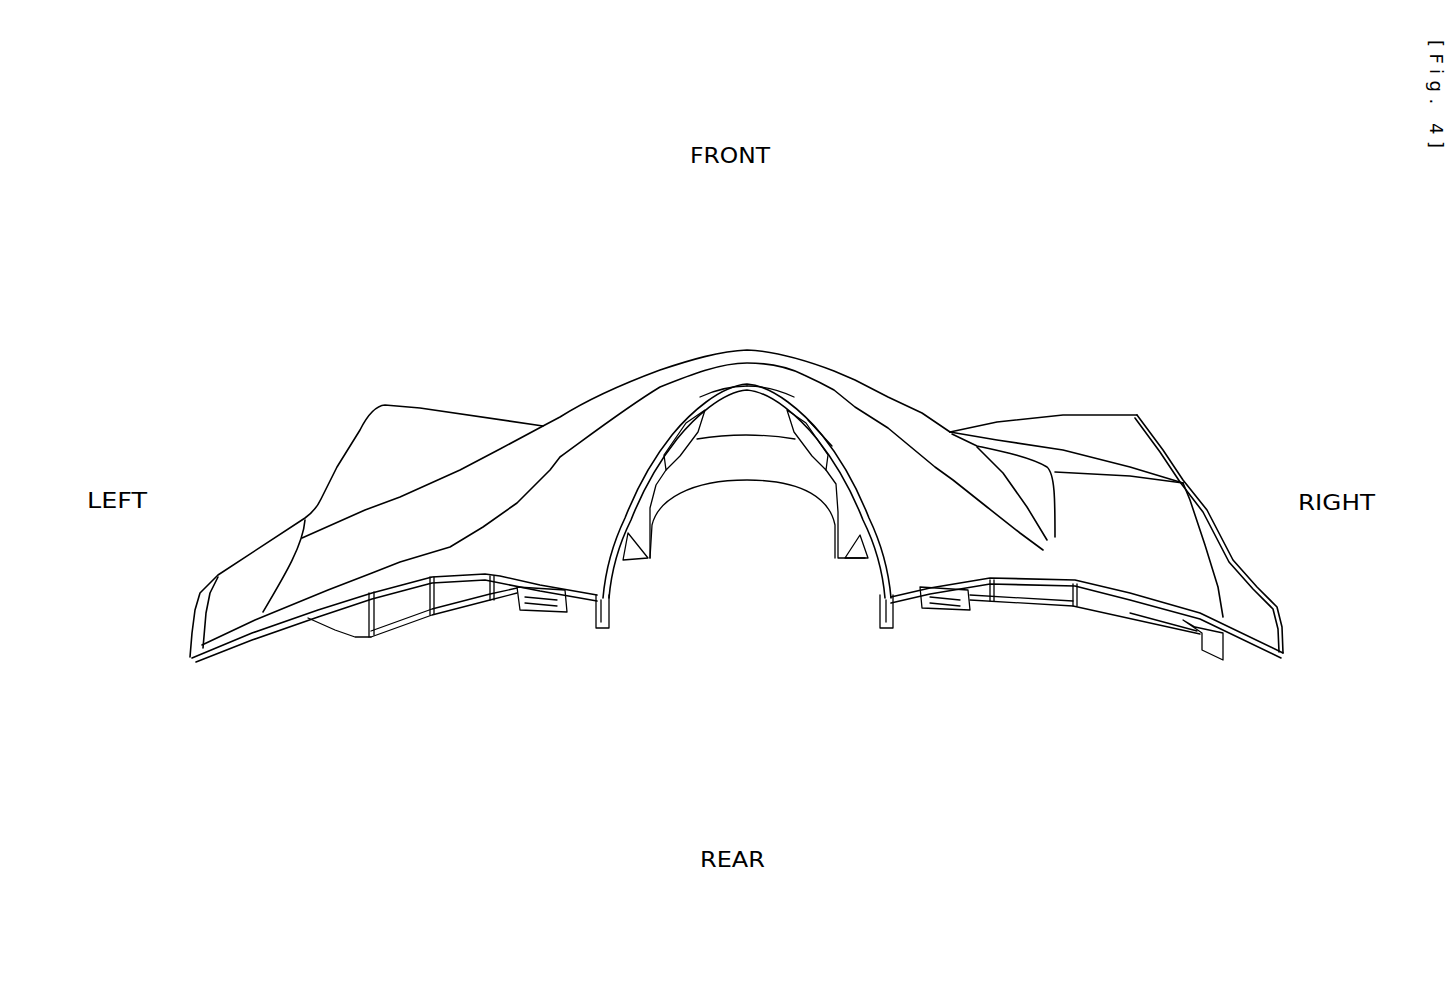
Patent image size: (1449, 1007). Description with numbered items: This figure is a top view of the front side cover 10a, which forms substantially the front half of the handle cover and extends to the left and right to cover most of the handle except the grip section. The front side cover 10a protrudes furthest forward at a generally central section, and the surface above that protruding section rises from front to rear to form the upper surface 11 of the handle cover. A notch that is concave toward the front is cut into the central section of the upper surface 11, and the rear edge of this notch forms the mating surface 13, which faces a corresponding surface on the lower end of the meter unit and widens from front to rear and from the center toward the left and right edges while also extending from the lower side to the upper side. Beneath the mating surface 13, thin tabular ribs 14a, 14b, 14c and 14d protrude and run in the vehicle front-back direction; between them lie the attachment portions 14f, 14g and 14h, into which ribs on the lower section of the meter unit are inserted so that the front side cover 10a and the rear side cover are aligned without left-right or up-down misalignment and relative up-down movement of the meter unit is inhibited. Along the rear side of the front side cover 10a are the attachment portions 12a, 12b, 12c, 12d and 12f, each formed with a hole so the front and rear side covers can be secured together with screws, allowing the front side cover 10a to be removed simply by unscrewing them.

The front side cover 10a is at (418, 362).
The upper surface 11 is at (893, 467).
The mating surface 13 is at (768, 390).
The rib 14a is at (632, 537).
The rib 14b is at (680, 455).
The rib 14c is at (652, 447).
The rib 14d is at (859, 538).
The attachment portion 14f is at (705, 392).
The attachment portion 14g is at (788, 397).
The attachment portion 14h is at (833, 450).
The attachment portion 12a is at (533, 608).
The attachment portion 12b is at (953, 608).
The attachment portion 12c is at (604, 630).
The attachment portion 12d is at (884, 630).
The attachment portion 12f is at (1200, 654).